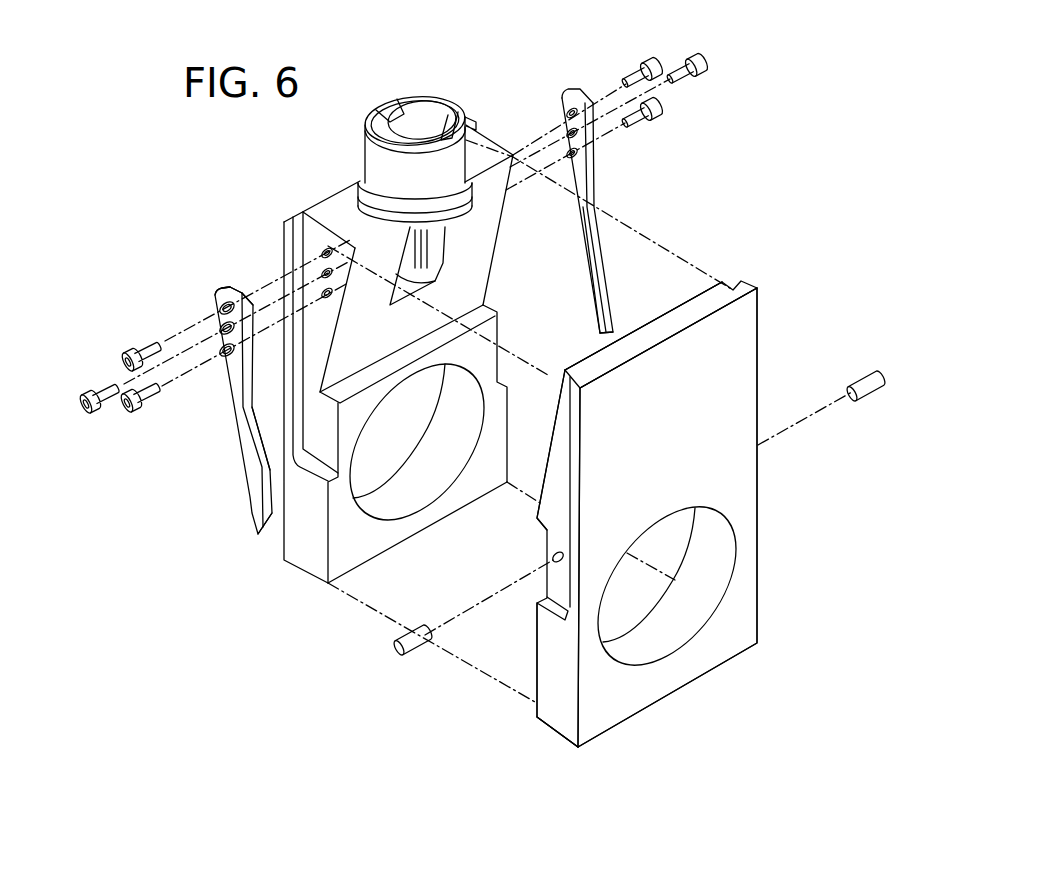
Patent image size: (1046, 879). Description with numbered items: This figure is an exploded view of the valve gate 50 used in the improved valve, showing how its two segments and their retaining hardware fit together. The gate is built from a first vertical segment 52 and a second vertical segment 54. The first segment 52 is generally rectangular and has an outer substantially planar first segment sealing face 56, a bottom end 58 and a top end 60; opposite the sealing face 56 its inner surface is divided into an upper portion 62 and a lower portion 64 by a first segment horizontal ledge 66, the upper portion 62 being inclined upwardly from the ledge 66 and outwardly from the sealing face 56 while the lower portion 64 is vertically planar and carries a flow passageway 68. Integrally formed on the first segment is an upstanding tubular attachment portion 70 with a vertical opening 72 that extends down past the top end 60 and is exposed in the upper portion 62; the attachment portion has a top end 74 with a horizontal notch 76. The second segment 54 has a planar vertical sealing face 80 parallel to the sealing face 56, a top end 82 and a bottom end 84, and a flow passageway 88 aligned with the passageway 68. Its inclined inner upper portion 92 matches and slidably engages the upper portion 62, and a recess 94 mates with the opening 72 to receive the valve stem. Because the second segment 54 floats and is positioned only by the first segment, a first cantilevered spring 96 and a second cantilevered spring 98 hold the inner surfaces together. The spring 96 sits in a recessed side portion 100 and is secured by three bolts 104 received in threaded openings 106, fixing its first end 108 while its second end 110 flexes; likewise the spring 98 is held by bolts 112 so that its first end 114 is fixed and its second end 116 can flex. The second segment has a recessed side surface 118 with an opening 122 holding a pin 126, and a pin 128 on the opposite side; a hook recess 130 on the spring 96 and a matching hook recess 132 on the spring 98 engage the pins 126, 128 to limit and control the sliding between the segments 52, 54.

The valve gate 50 is at (782, 212).
The first vertical segment 52 is at (320, 213).
The second vertical segment 54 is at (712, 317).
The first segment sealing face 56 is at (337, 187).
The bottom end 58 is at (310, 582).
The top end 60 is at (487, 153).
The upper portion 62 is at (480, 240).
The lower portion 64 is at (487, 463).
The first segment horizontal ledge 66 is at (303, 465).
The flow passageway 68 is at (423, 482).
The tubular attachment portion 70 is at (380, 172).
The vertical opening 72 is at (435, 118).
The top end 74 is at (452, 118).
The horizontal notch 76 is at (390, 110).
The sealing face 80 is at (741, 376).
The top end 82 is at (708, 302).
The bottom end 84 is at (413, 0).
The flow passageway 88 is at (675, 632).
The upper portion 92 is at (543, 453).
The recess 94 is at (641, 322).
The first cantilevered spring 96 is at (233, 382).
The second cantilevered spring 98 is at (593, 184).
The recessed side portion 100 is at (228, 292).
The bolts 104 is at (85, 394).
The threaded openings 106 is at (322, 300).
The first end 108 is at (221, 293).
The second end 110 is at (262, 530).
The bolts 112 is at (658, 118).
The first end 114 is at (576, 92).
The second end 116 is at (600, 332).
The recessed side surface 118 is at (550, 535).
The opening 122 is at (553, 561).
The pin 126 is at (417, 657).
The pin 128 is at (877, 398).
The hook recess 130 is at (252, 497).
The hook recess 132 is at (598, 302).